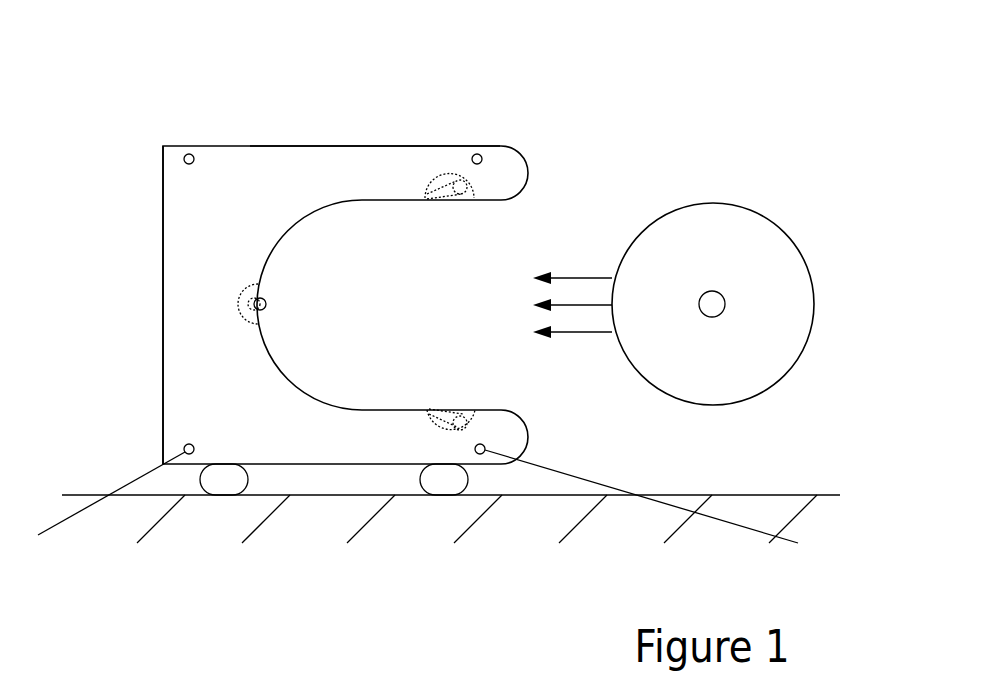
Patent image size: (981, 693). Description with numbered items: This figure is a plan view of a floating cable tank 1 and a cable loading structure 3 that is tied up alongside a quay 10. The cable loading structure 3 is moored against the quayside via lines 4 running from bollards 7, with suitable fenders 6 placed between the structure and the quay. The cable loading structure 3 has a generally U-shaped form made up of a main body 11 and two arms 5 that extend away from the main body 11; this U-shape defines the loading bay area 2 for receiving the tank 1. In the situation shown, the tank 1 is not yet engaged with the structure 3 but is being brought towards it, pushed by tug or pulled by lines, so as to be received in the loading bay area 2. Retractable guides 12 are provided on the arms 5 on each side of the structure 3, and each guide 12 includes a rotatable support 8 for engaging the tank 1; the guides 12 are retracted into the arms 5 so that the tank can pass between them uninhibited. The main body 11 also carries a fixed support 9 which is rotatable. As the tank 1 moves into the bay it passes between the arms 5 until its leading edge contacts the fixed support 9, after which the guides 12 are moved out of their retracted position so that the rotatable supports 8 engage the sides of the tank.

The tank 1 is at (767, 217).
The loading bay area 2 is at (496, 259).
The cable loading structure 3 is at (230, 121).
The lines 4 is at (116, 483).
The arms 5 is at (436, 159).
The fenders 6 is at (207, 496).
The bollards 7 is at (186, 155).
The rotatable support 8 is at (462, 198).
The fixed support 9 is at (264, 308).
The quay 10 is at (782, 495).
The main body 11 is at (215, 231).
The retractable guides 12 is at (436, 198).